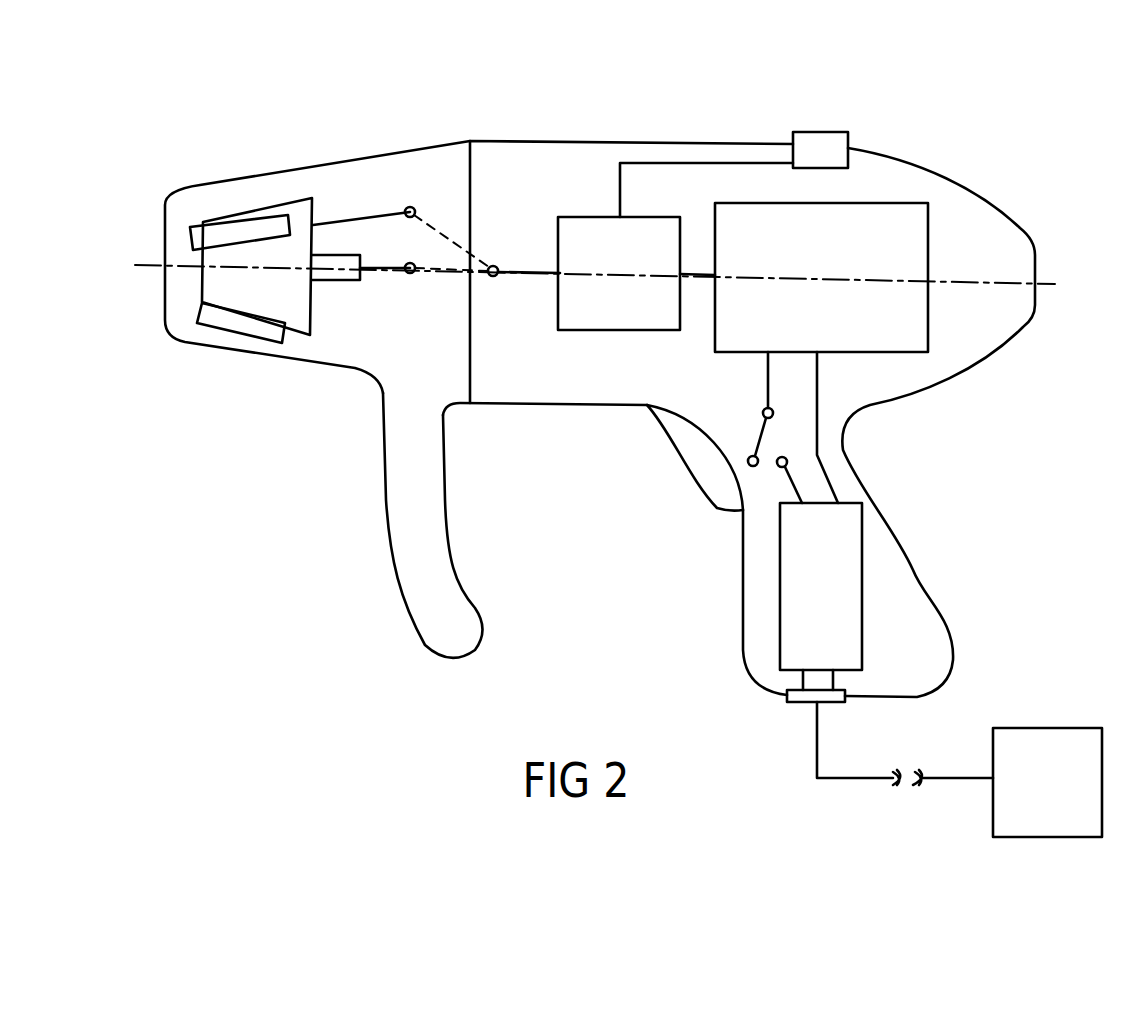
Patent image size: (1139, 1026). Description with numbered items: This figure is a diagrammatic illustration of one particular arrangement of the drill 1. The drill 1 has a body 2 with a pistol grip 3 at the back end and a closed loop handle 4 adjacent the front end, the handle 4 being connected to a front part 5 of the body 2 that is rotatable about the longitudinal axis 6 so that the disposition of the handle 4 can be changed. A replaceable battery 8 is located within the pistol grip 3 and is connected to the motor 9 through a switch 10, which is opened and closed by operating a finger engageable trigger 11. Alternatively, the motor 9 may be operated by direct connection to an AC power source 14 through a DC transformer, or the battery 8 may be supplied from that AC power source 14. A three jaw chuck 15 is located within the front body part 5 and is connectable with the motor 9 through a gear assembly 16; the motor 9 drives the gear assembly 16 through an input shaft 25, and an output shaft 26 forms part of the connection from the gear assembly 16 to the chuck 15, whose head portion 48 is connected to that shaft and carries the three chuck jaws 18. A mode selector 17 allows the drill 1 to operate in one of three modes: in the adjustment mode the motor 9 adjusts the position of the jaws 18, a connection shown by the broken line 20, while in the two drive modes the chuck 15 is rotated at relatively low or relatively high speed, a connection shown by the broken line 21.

The drill 1 is at (640, 68).
The body 2 is at (570, 140).
The pistol grip 3 is at (913, 550).
The closed loop handle 4 is at (383, 518).
The front part of the body 5 is at (345, 160).
The longitudinal axis 6 is at (150, 262).
The replaceable battery 8 is at (807, 582).
The motor 9 is at (888, 227).
The switch 10 is at (753, 437).
The trigger 11 is at (705, 485).
The AC power source 14 is at (1047, 753).
The three jaw chuck 15 is at (272, 203).
The gear assembly 16 is at (607, 290).
The mode selector 17 is at (817, 143).
The chuck jaws 18 is at (233, 232).
The jaw adjustment connection 20 is at (445, 235).
The chuck drive connection 21 is at (450, 275).
The input shaft 25 is at (700, 273).
The output shaft 26 is at (530, 270).
The head portion 48 is at (297, 310).